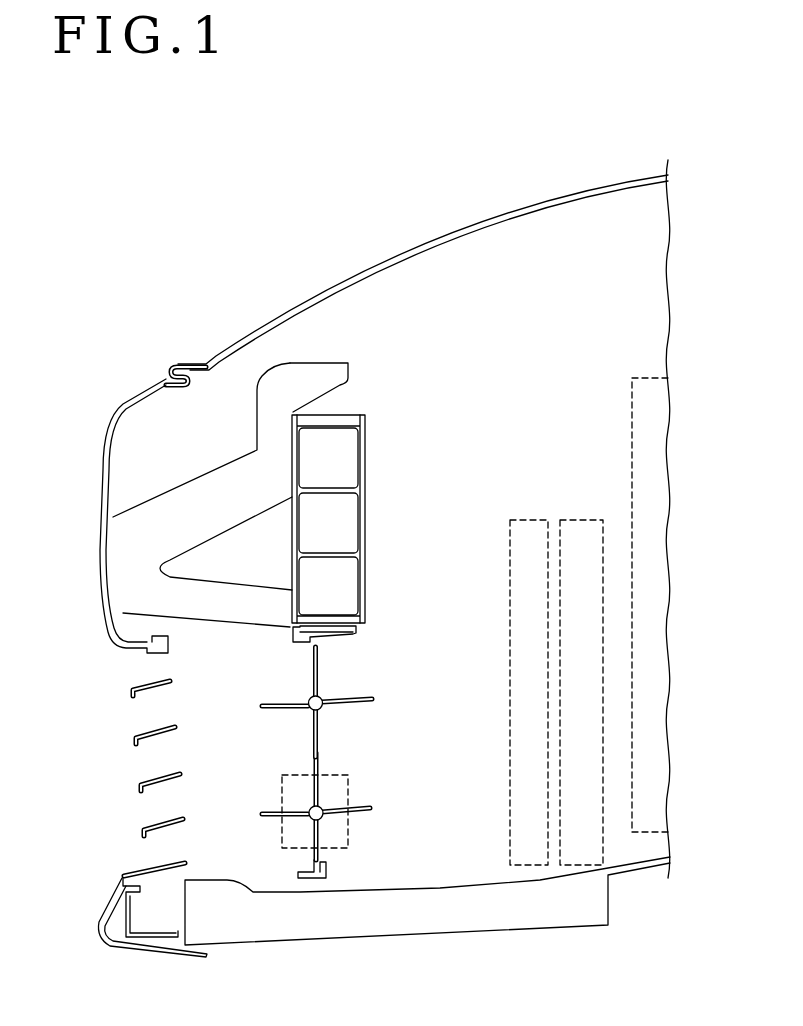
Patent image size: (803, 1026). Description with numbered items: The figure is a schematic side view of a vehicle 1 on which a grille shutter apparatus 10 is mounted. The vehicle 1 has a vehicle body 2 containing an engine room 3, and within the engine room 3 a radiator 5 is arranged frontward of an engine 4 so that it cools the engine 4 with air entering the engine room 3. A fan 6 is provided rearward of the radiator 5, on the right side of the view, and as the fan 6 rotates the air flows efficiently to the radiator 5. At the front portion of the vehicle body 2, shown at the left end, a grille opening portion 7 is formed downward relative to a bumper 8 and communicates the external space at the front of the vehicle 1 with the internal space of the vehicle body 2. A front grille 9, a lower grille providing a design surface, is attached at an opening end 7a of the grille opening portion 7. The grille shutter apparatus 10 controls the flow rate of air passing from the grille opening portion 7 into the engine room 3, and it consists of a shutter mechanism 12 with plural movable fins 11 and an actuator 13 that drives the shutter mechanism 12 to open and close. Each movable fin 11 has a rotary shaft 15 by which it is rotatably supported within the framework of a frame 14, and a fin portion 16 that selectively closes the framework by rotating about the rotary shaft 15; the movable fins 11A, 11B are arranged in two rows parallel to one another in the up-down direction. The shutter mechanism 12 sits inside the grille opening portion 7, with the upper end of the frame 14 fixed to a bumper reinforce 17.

The vehicle 1 is at (126, 166).
The vehicle body 2 is at (527, 203).
The engine room 3 is at (583, 260).
The engine 4 is at (643, 378).
The radiator 5 is at (526, 520).
The fan 6 is at (576, 520).
The grille opening portion 7 is at (122, 660).
The opening end 7a is at (138, 870).
The bumper 8 is at (373, 363).
The front grille 9 is at (132, 692).
The grille shutter apparatus 10 is at (246, 700).
The movable fins 11 is at (351, 760).
The movable fin 11A is at (361, 817).
The movable fin 11B is at (351, 700).
The shutter mechanism 12 is at (285, 757).
The actuator 13 is at (348, 837).
The frame 14 is at (357, 630).
The rotary shaft 15 is at (322, 717).
The fin portion 16 is at (318, 665).
The bumper reinforce 17 is at (365, 481).